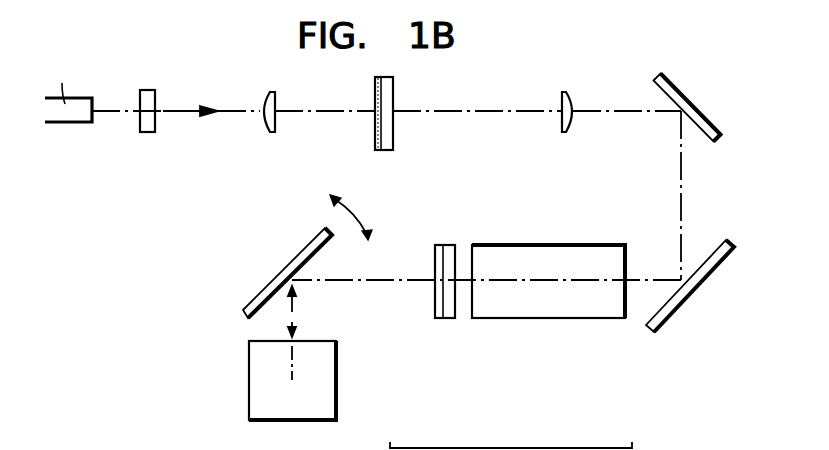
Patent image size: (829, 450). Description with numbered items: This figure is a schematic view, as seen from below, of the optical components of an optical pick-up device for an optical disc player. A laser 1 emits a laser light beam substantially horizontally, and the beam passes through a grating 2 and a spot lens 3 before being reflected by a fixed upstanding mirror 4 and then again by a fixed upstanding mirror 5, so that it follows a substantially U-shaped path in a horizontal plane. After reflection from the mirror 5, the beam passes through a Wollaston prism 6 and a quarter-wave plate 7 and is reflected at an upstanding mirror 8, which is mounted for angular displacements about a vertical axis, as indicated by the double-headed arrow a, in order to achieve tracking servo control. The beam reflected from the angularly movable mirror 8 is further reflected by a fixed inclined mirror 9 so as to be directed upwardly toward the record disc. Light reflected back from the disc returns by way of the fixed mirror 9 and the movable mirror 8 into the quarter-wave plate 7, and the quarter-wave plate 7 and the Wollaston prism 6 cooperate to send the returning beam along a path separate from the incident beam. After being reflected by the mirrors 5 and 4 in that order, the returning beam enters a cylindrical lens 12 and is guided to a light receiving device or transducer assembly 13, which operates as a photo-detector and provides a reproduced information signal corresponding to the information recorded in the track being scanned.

The laser 1 is at (75, 124).
The grating 2 is at (147, 132).
The spot lens 3 is at (267, 133).
The light receiving device or transducer assembly 13 is at (391, 150).
The cylindrical lens 12 is at (568, 133).
The fixed upstanding mirror 4 is at (708, 145).
The fixed upstanding mirror 5 is at (684, 302).
The Wollaston prism 6 is at (557, 318).
The quarter-wave plate 7 is at (446, 318).
The upstanding mirror 8 is at (265, 287).
The fixed inclined mirror 9 is at (336, 380).
The double-headed arrow a is at (360, 212).